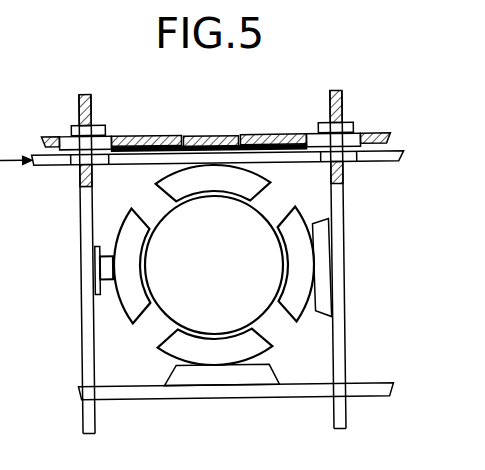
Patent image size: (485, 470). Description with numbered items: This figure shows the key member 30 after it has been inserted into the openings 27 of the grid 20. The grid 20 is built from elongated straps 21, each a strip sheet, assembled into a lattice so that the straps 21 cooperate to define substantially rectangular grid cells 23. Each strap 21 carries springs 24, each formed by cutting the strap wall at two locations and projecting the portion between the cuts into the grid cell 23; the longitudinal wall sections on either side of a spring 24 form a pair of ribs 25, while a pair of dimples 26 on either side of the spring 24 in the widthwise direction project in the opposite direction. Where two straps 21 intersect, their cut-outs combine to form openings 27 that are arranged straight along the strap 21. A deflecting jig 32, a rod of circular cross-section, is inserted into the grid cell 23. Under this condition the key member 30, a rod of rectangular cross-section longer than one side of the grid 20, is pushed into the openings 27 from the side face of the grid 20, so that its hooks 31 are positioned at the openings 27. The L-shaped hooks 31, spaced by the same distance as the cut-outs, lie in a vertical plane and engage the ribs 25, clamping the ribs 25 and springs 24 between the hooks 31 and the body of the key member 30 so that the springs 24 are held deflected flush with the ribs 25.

The grid 20 is at (352, 111).
The elongated strap 21 is at (86, 305).
The grid cell 23 is at (113, 336).
The spring 24 is at (206, 136).
The rib 25 is at (152, 136).
The dimple 26 is at (328, 270).
The opening 27 is at (86, 125).
The key member 30 is at (397, 160).
The hook 31 is at (72, 125).
The deflecting jig 32 is at (322, 213).